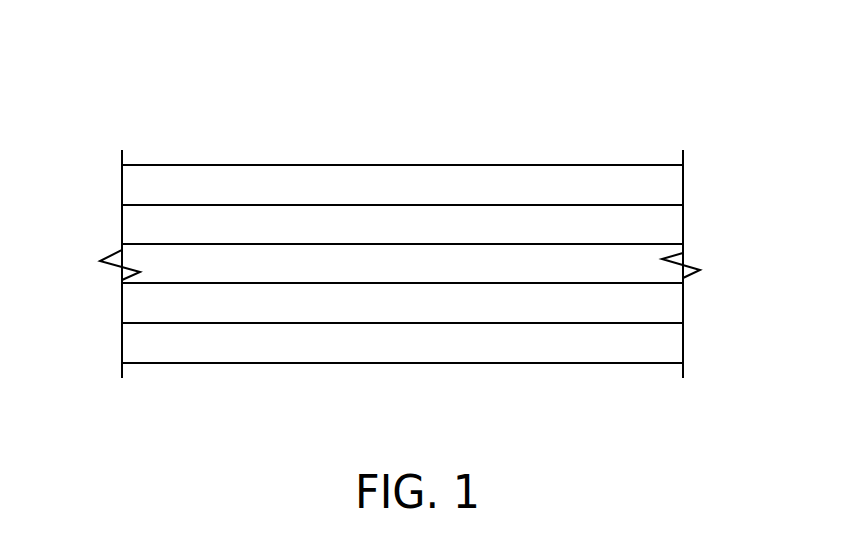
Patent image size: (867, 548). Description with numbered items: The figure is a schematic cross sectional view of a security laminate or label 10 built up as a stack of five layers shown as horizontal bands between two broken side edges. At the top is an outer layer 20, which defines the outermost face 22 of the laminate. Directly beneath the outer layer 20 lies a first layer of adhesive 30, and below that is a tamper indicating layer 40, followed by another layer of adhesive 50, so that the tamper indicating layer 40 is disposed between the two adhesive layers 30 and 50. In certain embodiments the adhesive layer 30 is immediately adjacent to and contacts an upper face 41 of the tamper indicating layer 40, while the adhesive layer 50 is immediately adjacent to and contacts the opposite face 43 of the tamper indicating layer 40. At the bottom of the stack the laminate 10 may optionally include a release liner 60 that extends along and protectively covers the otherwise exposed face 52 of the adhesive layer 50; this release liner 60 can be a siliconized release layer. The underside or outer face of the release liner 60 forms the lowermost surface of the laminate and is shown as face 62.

The security laminate 10 is at (120, 74).
The outer layer 20 is at (667, 184).
The outermost face 22 is at (545, 165).
The first layer of adhesive 30 is at (667, 229).
The tamper indicating layer 40 is at (612, 259).
The face of the tamper indicating layer 41 is at (163, 244).
The face of the tamper indicating layer 43 is at (163, 284).
The layer of adhesive 50 is at (667, 305).
The exposed face of the adhesive layer 52 is at (140, 323).
The release liner 60 is at (667, 346).
The outer face of the release liner 62 is at (590, 364).